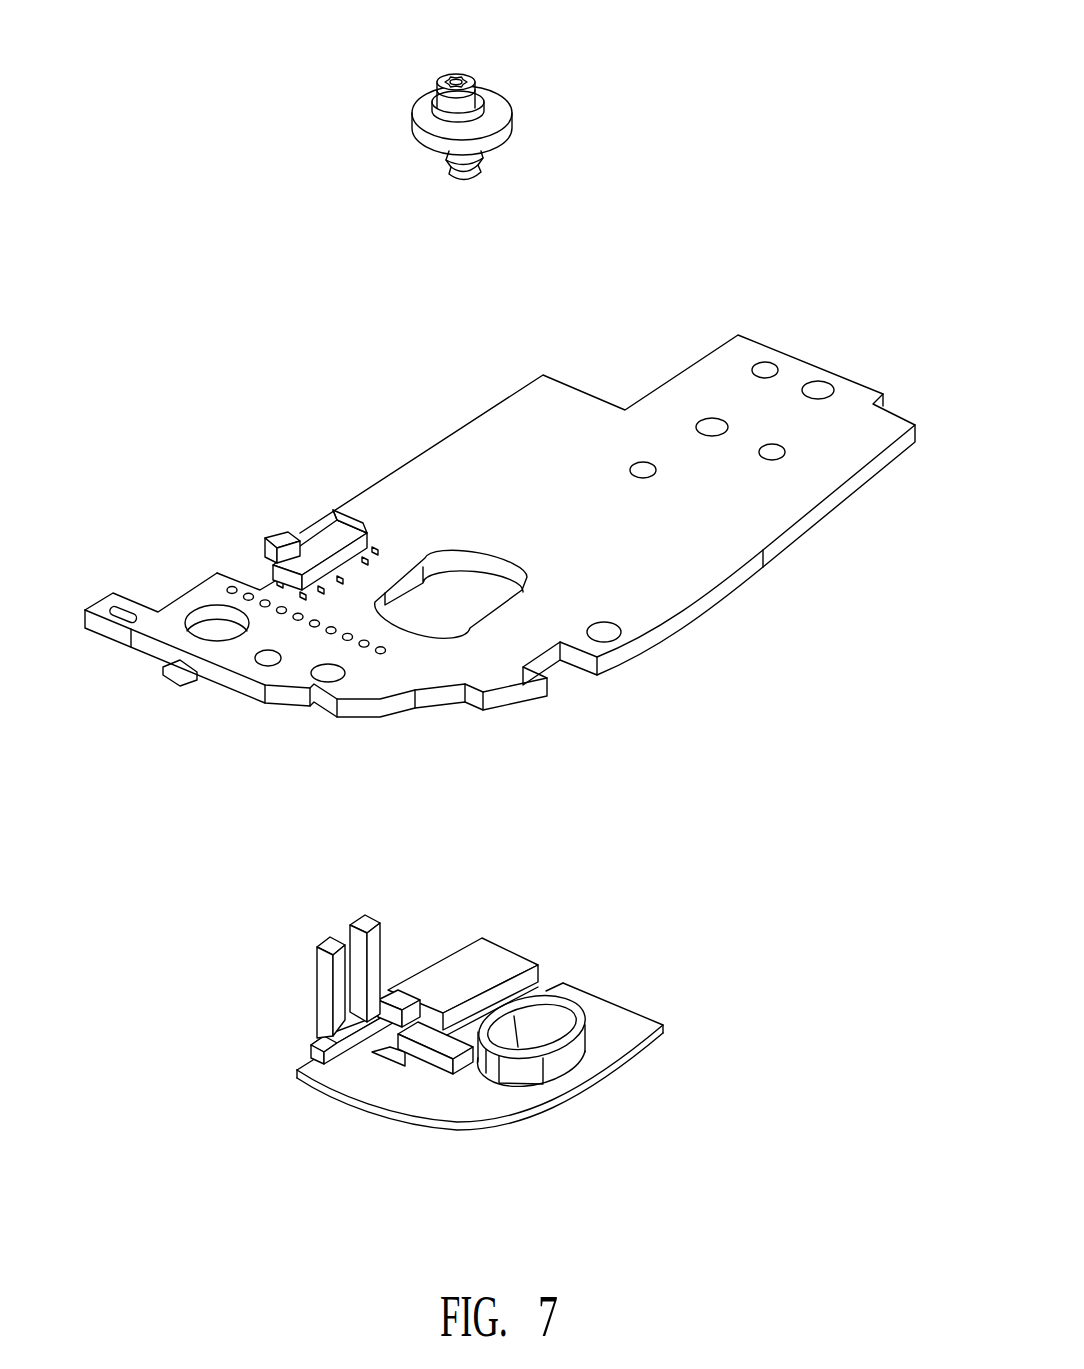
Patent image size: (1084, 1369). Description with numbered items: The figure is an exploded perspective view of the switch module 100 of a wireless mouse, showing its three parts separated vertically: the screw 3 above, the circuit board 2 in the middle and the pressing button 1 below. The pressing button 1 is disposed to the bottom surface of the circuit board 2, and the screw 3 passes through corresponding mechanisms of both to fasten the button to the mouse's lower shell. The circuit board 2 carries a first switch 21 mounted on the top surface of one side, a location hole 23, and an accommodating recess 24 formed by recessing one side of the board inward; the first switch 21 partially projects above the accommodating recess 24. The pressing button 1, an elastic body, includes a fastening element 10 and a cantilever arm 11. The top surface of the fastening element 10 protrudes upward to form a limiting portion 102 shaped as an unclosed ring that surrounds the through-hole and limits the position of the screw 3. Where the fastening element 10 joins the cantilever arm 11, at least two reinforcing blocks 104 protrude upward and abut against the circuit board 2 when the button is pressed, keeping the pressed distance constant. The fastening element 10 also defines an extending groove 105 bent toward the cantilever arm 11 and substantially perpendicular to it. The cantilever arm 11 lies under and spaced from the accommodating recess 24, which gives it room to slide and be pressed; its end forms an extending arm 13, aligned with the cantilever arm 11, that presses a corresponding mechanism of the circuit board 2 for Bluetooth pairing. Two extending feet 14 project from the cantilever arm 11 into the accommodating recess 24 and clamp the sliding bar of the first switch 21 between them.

The switch module 100 is at (66, 45).
The screw 3 is at (518, 121).
The circuit board 2 is at (768, 586).
The first switch 21 is at (267, 538).
The location hole 23 is at (443, 605).
The accommodating recess 24 is at (310, 527).
The pressing button 1 is at (707, 1034).
The fastening element 10 is at (618, 1033).
The cantilever arm 11 is at (449, 982).
The extending arm 13 is at (497, 962).
The extending feet 14 is at (327, 977).
The limiting portion 102 is at (551, 1057).
The reinforcing blocks 104 is at (358, 1022).
The extending groove 105 is at (427, 1063).